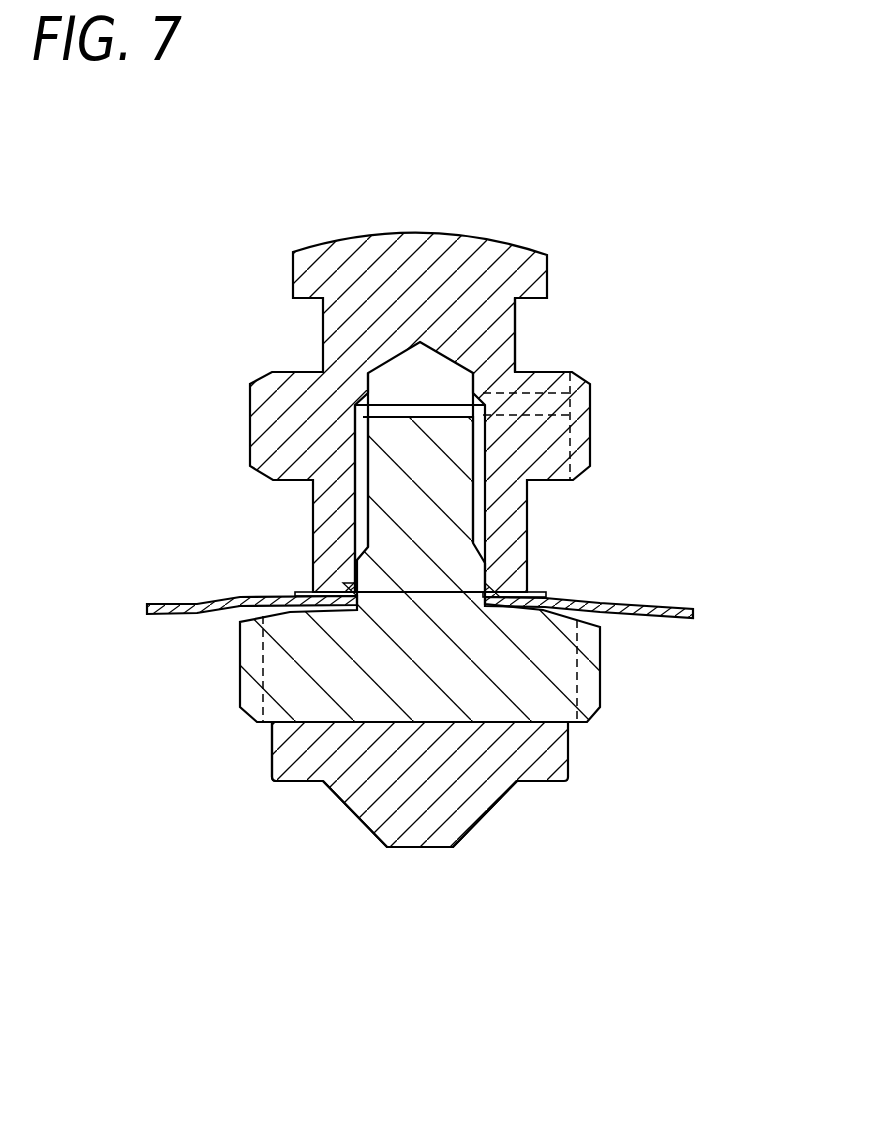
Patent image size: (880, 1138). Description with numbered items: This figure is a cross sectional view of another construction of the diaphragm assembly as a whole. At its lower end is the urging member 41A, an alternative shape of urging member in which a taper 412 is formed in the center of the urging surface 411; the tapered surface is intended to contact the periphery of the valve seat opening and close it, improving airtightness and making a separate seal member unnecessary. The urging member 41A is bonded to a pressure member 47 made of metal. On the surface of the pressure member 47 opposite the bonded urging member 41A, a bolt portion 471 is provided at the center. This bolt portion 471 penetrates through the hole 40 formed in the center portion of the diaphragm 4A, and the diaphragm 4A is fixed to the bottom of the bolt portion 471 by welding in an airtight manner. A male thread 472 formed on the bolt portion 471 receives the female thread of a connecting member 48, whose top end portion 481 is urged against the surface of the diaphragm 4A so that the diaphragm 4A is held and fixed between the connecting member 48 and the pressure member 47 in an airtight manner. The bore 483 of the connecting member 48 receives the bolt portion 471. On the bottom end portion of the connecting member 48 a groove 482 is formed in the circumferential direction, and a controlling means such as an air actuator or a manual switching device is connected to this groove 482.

The connecting member 48 is at (528, 244).
The groove 482 is at (517, 333).
The bore of nut 483 is at (379, 473).
The top end portion 481 is at (327, 603).
The pressure member 47 is at (600, 670).
The bolt portion 471 is at (460, 505).
The male thread 472 is at (483, 468).
The plate 4A is at (682, 610).
The hole 40 is at (352, 595).
The urging member 41A is at (272, 767).
The urging surface 411 is at (301, 784).
The taper 412 is at (381, 841).